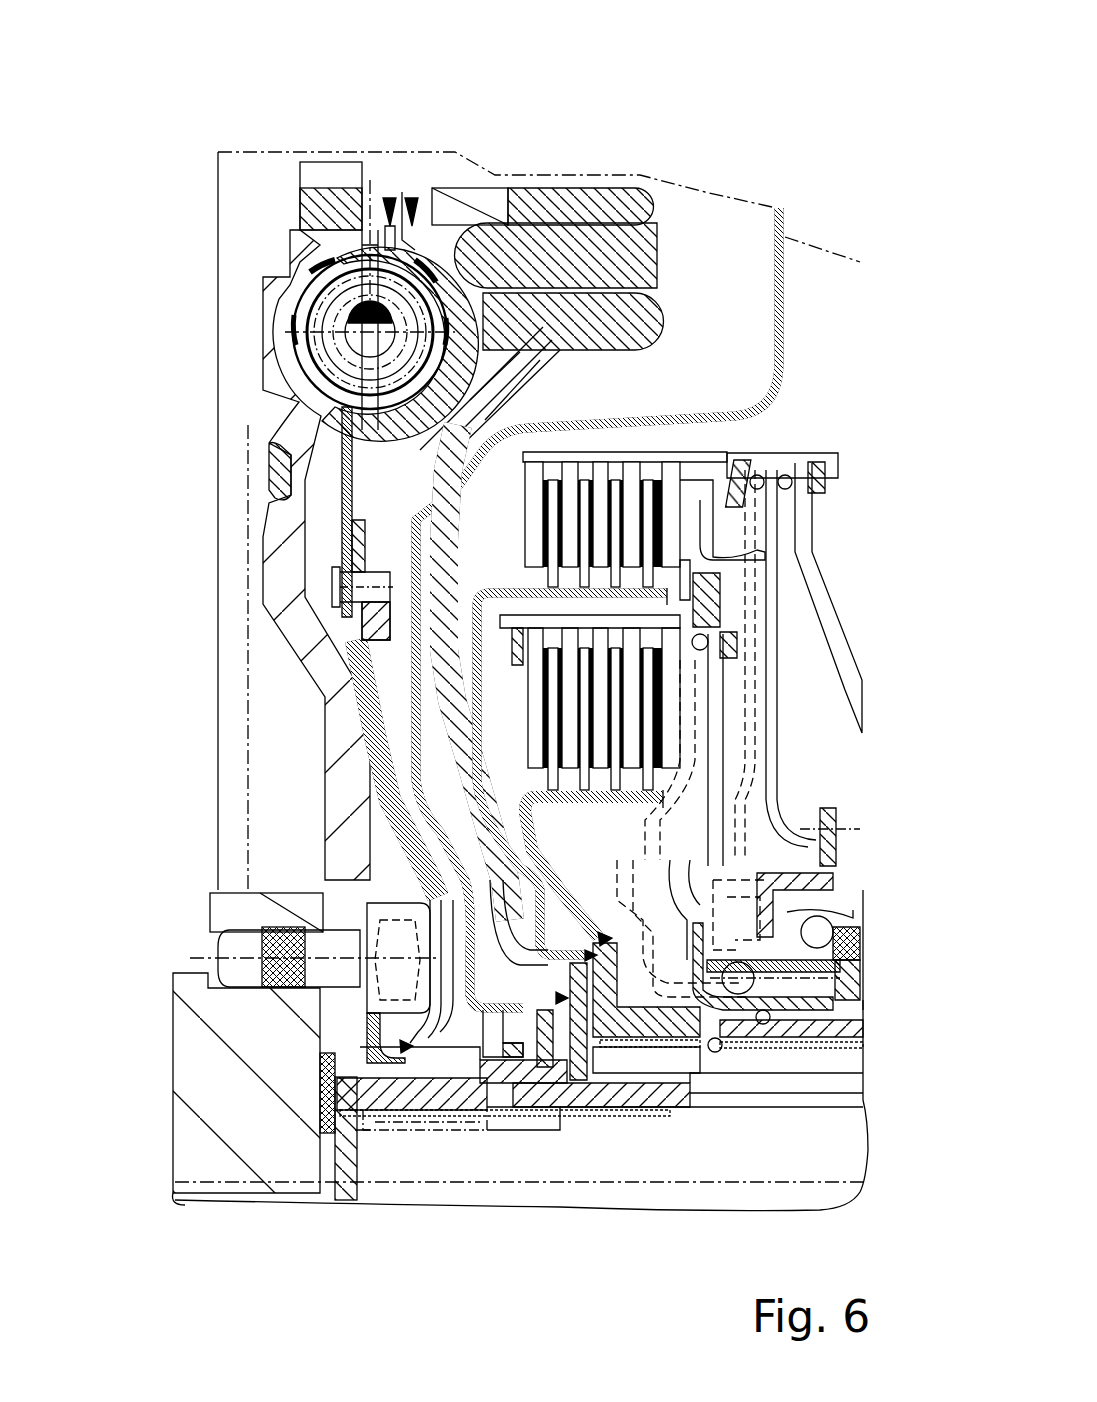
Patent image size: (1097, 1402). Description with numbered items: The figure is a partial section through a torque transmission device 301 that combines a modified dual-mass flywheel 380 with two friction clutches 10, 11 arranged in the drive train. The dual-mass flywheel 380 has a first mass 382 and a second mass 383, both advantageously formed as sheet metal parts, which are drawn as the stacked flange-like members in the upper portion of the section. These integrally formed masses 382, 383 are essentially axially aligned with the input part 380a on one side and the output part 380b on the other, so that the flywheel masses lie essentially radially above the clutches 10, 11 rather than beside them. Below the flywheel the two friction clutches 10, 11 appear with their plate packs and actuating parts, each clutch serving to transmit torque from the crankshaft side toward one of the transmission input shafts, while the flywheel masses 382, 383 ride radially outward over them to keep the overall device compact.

The torque transmission device 301 is at (678, 148).
The dual-mass flywheel 380 is at (398, 190).
The input part 380a is at (290, 408).
The output part 380b is at (393, 800).
The first mass 382 is at (582, 198).
The second mass 383 is at (645, 330).
The friction clutch 10 is at (718, 436).
The friction clutch 11 is at (622, 817).